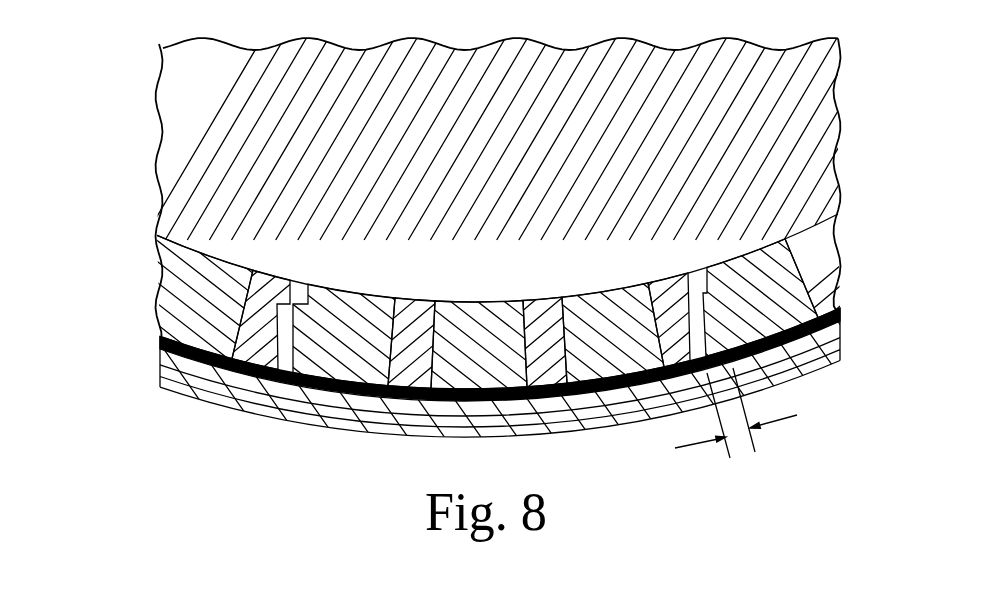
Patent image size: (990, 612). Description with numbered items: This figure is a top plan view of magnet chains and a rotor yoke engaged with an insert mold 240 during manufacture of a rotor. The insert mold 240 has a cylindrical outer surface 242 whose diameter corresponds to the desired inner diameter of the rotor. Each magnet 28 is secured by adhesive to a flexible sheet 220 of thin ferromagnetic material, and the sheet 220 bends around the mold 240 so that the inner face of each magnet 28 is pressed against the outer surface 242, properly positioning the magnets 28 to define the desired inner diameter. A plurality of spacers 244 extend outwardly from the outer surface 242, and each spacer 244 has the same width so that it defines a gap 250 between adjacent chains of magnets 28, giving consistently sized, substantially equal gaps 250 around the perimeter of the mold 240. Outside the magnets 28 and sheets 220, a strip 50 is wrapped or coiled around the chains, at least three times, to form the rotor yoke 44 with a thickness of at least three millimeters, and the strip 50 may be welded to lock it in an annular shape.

The insert mold 240 is at (834, 52).
The cylindrical outer surface 242 is at (830, 222).
The spacer 244 is at (713, 304).
The sheet 220 is at (840, 314).
The strip 50 is at (830, 343).
The rotor yoke 44 is at (832, 358).
The magnet 28 is at (162, 297).
The gap 250 is at (782, 420).